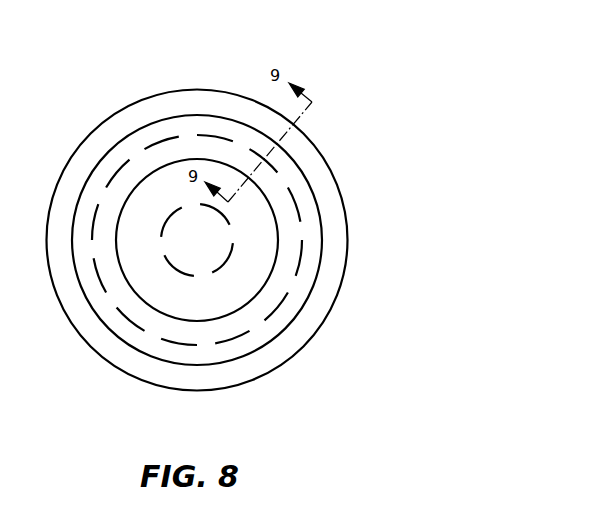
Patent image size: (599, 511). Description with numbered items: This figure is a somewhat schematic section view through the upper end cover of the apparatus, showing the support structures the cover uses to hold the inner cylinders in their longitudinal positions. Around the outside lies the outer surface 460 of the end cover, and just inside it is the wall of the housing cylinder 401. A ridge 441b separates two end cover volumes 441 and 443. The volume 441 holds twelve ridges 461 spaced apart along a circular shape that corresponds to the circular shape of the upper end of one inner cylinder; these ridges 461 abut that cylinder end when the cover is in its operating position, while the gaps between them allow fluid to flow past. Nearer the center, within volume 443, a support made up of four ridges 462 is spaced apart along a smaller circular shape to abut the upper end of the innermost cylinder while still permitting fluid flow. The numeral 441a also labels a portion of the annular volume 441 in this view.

The housing cylinder 401 is at (300, 168).
The outer surface of the end cover 460 is at (335, 178).
The end cover volume 441 is at (308, 215).
The outer wall of annular wall 441a is at (322, 250).
The ridge 441b is at (265, 287).
The ridges 461 is at (170, 135).
The ridges 462 is at (160, 232).
The end cover volume 443 is at (207, 297).